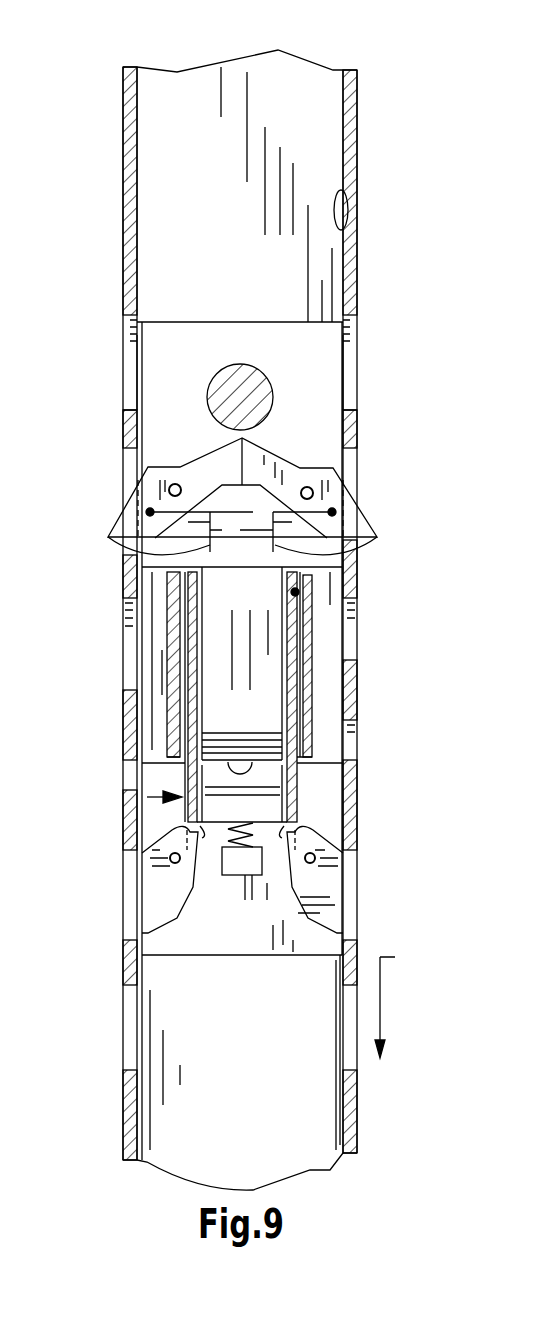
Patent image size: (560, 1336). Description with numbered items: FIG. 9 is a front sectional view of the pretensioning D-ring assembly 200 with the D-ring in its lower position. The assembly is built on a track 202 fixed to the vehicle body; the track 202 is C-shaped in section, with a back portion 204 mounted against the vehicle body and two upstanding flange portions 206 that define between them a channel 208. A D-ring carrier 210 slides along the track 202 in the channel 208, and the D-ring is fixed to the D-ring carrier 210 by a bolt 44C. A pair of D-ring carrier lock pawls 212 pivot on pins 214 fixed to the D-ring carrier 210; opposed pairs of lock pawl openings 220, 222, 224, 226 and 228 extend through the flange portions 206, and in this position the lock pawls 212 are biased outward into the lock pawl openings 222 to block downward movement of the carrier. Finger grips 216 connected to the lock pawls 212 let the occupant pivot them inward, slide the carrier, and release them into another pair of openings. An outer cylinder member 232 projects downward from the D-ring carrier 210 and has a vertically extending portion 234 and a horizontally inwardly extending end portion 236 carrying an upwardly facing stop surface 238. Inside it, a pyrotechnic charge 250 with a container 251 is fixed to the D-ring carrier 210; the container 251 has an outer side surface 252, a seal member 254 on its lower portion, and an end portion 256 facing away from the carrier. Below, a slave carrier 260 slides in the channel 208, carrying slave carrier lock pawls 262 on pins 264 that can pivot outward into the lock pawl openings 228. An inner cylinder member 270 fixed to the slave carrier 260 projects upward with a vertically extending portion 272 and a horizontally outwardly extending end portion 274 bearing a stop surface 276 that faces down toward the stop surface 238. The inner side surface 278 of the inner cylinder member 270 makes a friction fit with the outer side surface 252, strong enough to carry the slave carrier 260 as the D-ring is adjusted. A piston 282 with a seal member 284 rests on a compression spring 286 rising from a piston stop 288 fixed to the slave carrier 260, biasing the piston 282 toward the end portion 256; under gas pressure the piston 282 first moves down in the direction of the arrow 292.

The pretensioning D-ring assembly 200 is at (148, 42).
The track 202 is at (112, 94).
The back portion 204 is at (173, 107).
The flange portions 206 is at (130, 134).
The channel 208 is at (346, 192).
The D-ring carrier 210 is at (315, 367).
The bolt 44C is at (248, 374).
The lock pawl openings 220 is at (133, 384).
The lock pawl openings 222 is at (130, 452).
The D-ring carrier lock pawls 212 is at (124, 510).
The pins 214 is at (177, 486).
The finger grips 216 is at (125, 559).
The lock pawl openings 224 is at (172, 578).
The horizontally outwardly extending end portion 274 is at (182, 585).
The stop surface 276 is at (168, 640).
The lock pawl openings 226 is at (128, 708).
The inner side surface 278 is at (200, 728).
The seal member 254 is at (264, 712).
The end portion 256 is at (263, 752).
The pyrotechnic charge 250 is at (292, 584).
The outer side surface 252 is at (298, 591).
The container 251 is at (263, 647).
The outer cylinder member 232 is at (332, 668).
The vertically extending portion 234 is at (313, 708).
The upwardly facing stop surface 238 is at (315, 723).
The horizontally inwardly extending end portion 236 is at (300, 763).
The seal member 284 is at (283, 801).
The piston 282 is at (262, 808).
The vertically extending portion 272 is at (187, 773).
The inner cylinder member 270 is at (147, 798).
The lock pawl openings 228 is at (145, 855).
The slave carrier lock pawls 262 is at (152, 906).
The pins 264 is at (178, 860).
The piston stop 288 is at (240, 868).
The compression spring 286 is at (288, 820).
The slave carrier 260 is at (175, 940).
The arrow 292 is at (404, 1007).